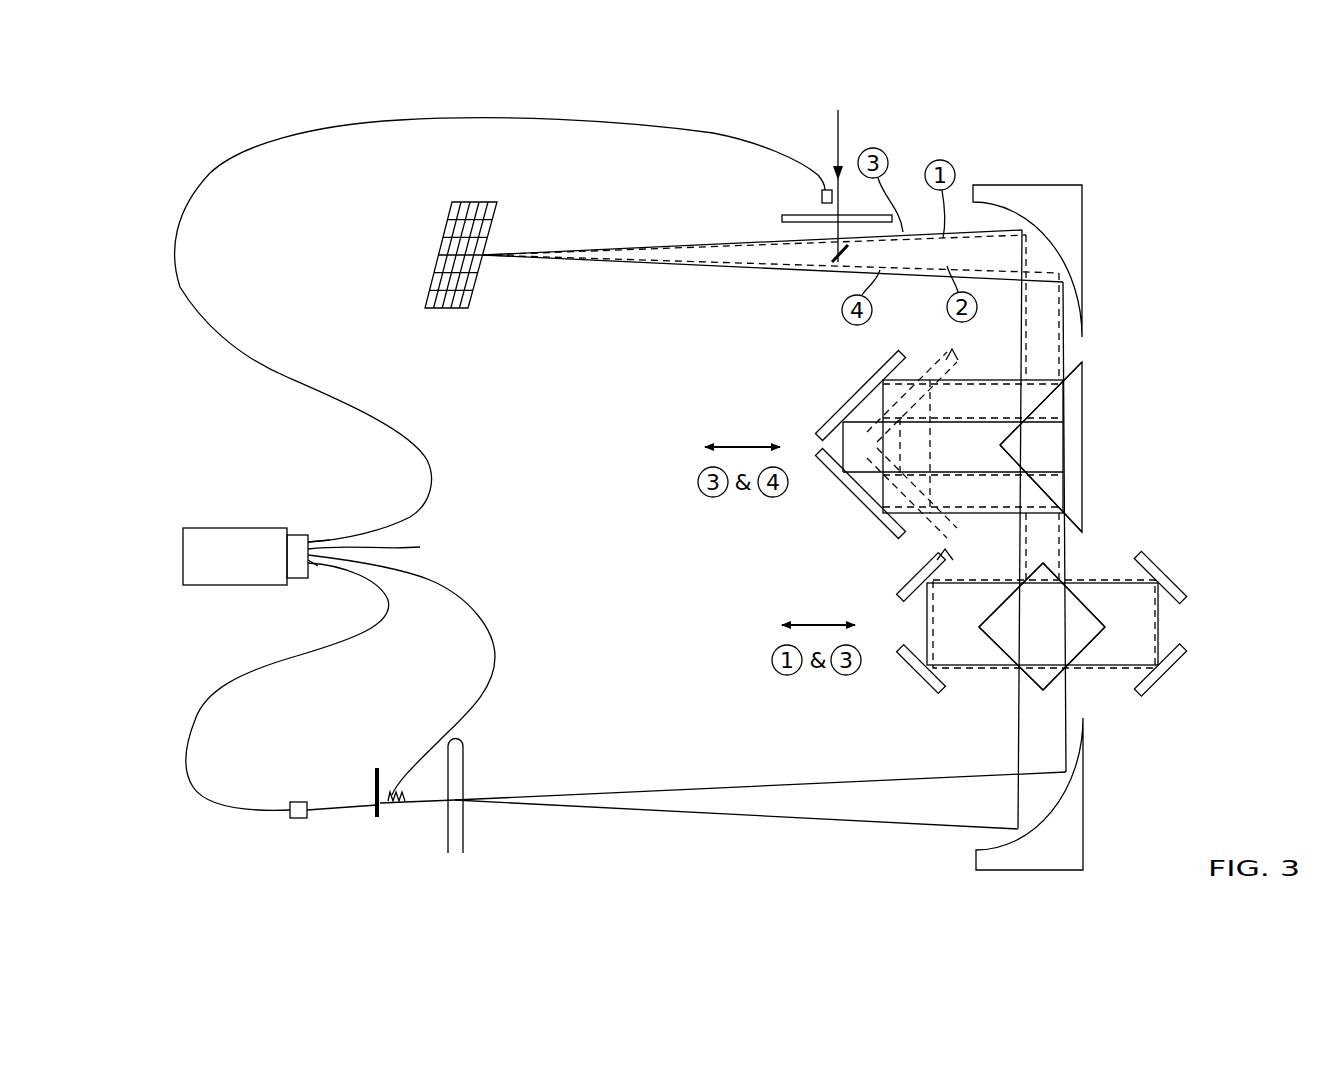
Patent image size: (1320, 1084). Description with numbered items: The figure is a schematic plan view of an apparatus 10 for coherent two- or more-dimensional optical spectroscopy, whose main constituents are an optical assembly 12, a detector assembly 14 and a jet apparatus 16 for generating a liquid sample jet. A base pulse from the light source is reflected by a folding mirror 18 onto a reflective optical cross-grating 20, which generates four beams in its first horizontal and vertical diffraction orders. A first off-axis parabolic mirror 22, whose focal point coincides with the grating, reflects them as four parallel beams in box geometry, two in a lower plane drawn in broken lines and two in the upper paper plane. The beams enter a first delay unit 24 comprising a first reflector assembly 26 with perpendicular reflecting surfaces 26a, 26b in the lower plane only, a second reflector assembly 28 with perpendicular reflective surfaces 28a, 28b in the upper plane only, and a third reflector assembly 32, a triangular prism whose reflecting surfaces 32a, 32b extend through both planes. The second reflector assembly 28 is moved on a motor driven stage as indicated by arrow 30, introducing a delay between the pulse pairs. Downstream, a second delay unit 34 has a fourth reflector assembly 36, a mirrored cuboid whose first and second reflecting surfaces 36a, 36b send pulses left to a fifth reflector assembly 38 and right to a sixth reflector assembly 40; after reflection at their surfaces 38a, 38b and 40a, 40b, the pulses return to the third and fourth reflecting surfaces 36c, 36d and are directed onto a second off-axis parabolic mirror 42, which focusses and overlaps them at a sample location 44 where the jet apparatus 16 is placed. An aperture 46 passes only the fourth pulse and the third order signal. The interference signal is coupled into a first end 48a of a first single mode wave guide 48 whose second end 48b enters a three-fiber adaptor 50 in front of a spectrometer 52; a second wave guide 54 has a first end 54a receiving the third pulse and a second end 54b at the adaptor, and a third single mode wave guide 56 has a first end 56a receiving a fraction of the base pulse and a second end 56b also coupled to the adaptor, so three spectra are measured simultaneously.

The apparatus 10 is at (156, 166).
The optical assembly 12 is at (407, 241).
The detector assembly 14 is at (253, 604).
The jet apparatus 16 is at (480, 761).
The folding mirror 18 is at (838, 268).
The reflective optical cross-grating 20 is at (476, 298).
The first off-axis parabolic mirror 22 is at (1045, 187).
The first delay unit 24 is at (841, 375).
The first reflector assembly 26 is at (928, 363).
The first reflecting surface 26a is at (950, 361).
The second reflecting surface 26b is at (950, 542).
The second reflector assembly 28 is at (833, 414).
The first reflective surface 28a is at (906, 358).
The second reflective surface 28b is at (906, 536).
The arrow 30 is at (730, 440).
The third reflector assembly 32 is at (1082, 437).
The first reflecting surface 32a is at (1082, 352).
The second reflecting surface 32b is at (1082, 543).
The second delay unit 34 is at (1248, 575).
The fourth reflector assembly 36 is at (1031, 634).
The first reflecting surface 36a is at (995, 613).
The second reflecting surface 36b is at (1083, 607).
The third reflecting surface 36c is at (996, 649).
The fourth reflecting surface 36d is at (1083, 641).
The fifth reflector assembly 38 is at (882, 598).
The first reflecting surface 38a is at (912, 601).
The second reflecting surface 38b is at (950, 686).
The sixth reflector assembly 40 is at (1190, 624).
The first reflecting surface 40a is at (1176, 603).
The second reflecting surface 40b is at (1146, 680).
The second off-axis parabolic mirror 42 is at (1068, 825).
The sample location 44 is at (458, 803).
The aperture 46 is at (376, 772).
The first single mode wave guide 48 is at (184, 730).
The first end 48a is at (297, 801).
The second end 48b is at (312, 568).
The three-fiber adaptor 50 is at (295, 535).
The spectrometer 52 is at (205, 528).
The second wave guide 54 is at (480, 610).
The first end 54a is at (395, 806).
The second end 54b is at (382, 545).
The third single mode wave guide 56 is at (180, 290).
The first end 56a is at (820, 202).
The second end 56b is at (338, 537).